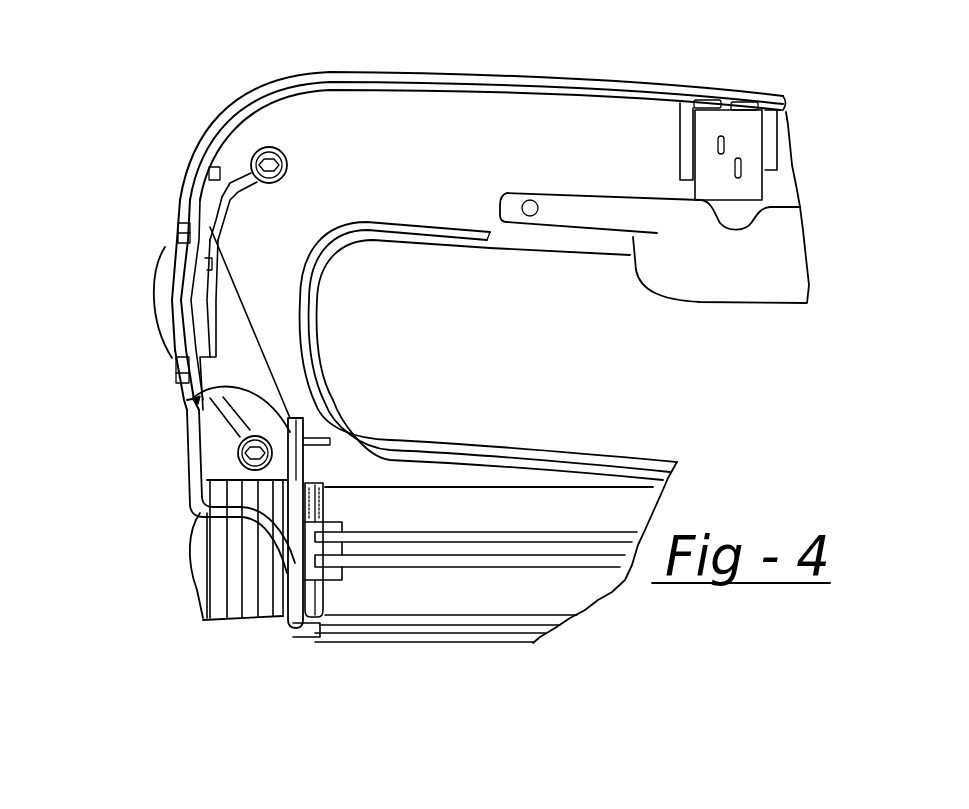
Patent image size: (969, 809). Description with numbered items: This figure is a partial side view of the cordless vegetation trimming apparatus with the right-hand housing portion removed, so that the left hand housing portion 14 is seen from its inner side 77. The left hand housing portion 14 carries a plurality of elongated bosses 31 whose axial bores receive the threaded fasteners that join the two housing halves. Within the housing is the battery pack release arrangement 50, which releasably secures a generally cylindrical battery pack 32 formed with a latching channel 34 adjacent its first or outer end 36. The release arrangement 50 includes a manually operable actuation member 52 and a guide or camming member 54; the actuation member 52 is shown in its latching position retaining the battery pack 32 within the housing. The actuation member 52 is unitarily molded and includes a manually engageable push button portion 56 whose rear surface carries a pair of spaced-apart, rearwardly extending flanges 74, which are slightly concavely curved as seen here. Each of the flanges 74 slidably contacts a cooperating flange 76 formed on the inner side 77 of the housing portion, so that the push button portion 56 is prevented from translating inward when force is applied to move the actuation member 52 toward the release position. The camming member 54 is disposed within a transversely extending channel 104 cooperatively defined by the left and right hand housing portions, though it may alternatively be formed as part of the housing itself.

The left hand housing portion 14 is at (557, 74).
The inner side 77 is at (467, 138).
The elongated bosses 31 is at (274, 146).
The battery pack release arrangement 50 is at (153, 236).
The cooperating flange 76 is at (240, 177).
The rearwardly extending flanges 74 is at (205, 258).
The push button portion 56 is at (178, 300).
The actuation member 52 is at (195, 399).
The battery pack 32 is at (202, 555).
The first or outer end 36 is at (213, 628).
The latching channel 34 is at (270, 617).
The camming member 54 is at (297, 633).
The transversely extending channel 104 is at (314, 637).